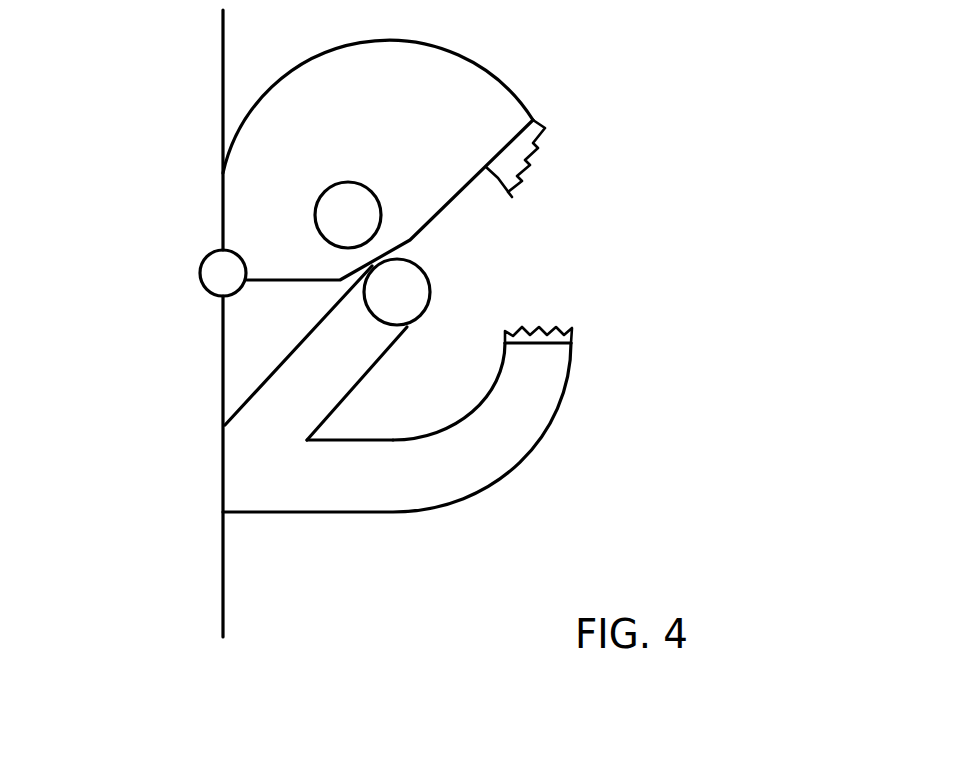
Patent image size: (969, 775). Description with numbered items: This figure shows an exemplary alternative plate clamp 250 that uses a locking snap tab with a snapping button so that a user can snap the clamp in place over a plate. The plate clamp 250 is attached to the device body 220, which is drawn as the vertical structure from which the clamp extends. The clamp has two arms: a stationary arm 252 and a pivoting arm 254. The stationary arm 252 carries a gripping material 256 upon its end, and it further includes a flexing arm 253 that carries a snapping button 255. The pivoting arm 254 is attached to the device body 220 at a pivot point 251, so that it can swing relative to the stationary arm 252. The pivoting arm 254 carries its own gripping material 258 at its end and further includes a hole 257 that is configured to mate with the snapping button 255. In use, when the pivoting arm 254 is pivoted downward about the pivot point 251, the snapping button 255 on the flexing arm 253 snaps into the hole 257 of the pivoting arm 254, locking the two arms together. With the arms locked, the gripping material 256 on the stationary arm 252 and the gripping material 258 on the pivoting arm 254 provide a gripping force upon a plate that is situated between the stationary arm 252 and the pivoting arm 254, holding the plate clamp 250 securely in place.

The device body 220 is at (242, 557).
The plate clamp 250 is at (396, 274).
The pivot point 251 is at (185, 260).
The stationary arm 252 is at (546, 395).
The flexing arm 253 is at (302, 367).
The pivoting arm 254 is at (462, 85).
The snapping button 255 is at (607, 220).
The gripping material 256 is at (583, 330).
The hole 257 is at (328, 200).
The gripping material 258 is at (565, 142).